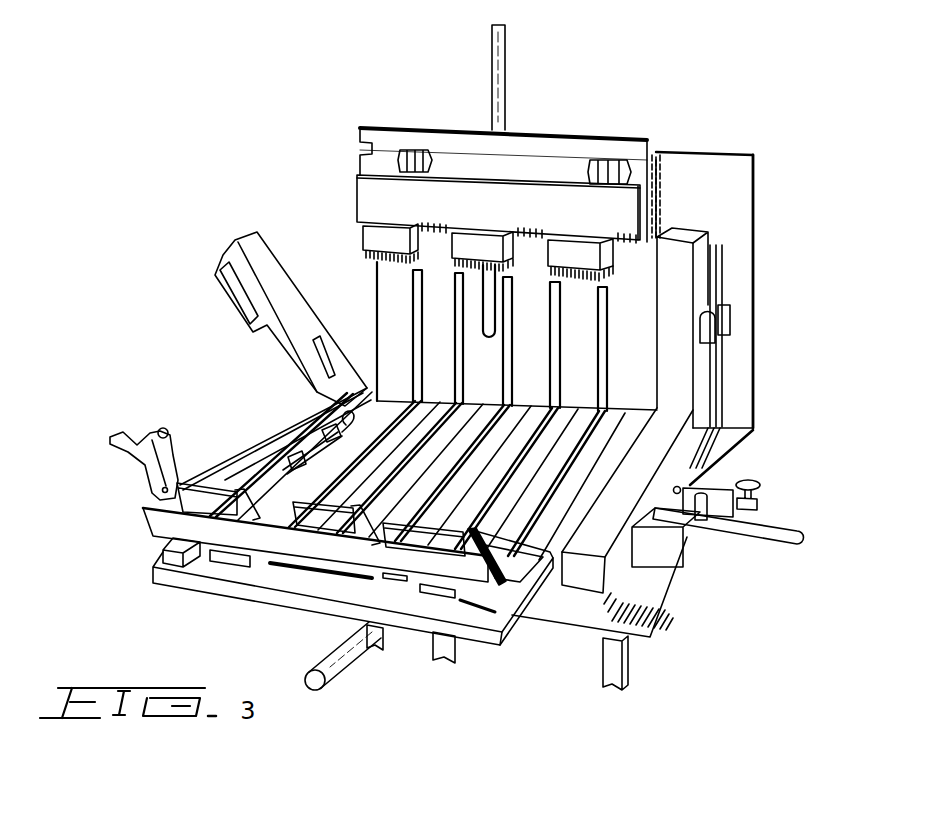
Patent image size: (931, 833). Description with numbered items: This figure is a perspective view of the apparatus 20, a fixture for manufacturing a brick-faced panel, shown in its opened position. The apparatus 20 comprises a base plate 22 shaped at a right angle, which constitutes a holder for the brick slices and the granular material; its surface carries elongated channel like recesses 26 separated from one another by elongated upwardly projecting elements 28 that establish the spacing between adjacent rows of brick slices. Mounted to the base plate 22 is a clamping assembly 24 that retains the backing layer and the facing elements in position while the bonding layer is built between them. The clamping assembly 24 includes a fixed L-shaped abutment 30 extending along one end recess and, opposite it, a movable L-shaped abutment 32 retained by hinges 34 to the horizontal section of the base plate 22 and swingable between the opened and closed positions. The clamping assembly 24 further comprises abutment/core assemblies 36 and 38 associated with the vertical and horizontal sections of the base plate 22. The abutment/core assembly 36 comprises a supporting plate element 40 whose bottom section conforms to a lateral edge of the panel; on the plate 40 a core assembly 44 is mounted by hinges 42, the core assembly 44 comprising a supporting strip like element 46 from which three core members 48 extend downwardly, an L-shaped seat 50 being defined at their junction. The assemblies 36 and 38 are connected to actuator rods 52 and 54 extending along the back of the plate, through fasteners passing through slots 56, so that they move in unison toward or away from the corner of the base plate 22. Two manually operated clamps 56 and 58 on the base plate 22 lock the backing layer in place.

The apparatus 20 is at (725, 138).
The base plate 22 is at (758, 288).
The clamping assembly 24 is at (292, 254).
The elongated channel like recesses 26 is at (473, 402).
The elongated upwardly projecting elements 28 is at (508, 538).
The fixed L-shaped abutment 30 is at (702, 257).
The movable L-shaped abutment 32 is at (300, 358).
The hinges 34 is at (296, 447).
The abutment/core assembly 36 is at (607, 132).
The abutment/core assembly 38 is at (205, 582).
The supporting plate element 40 is at (392, 143).
The hinges 42 is at (588, 172).
The core assembly 44 is at (642, 218).
The supporting strip like element 46 is at (368, 205).
The core members 48 is at (392, 242).
The L-shaped seat 50 is at (574, 250).
The actuator rod 52 is at (507, 100).
The actuator rod 54 is at (342, 668).
The slot / manually operated clamp 56 is at (478, 330).
The manually operated clamp 58 is at (145, 440).